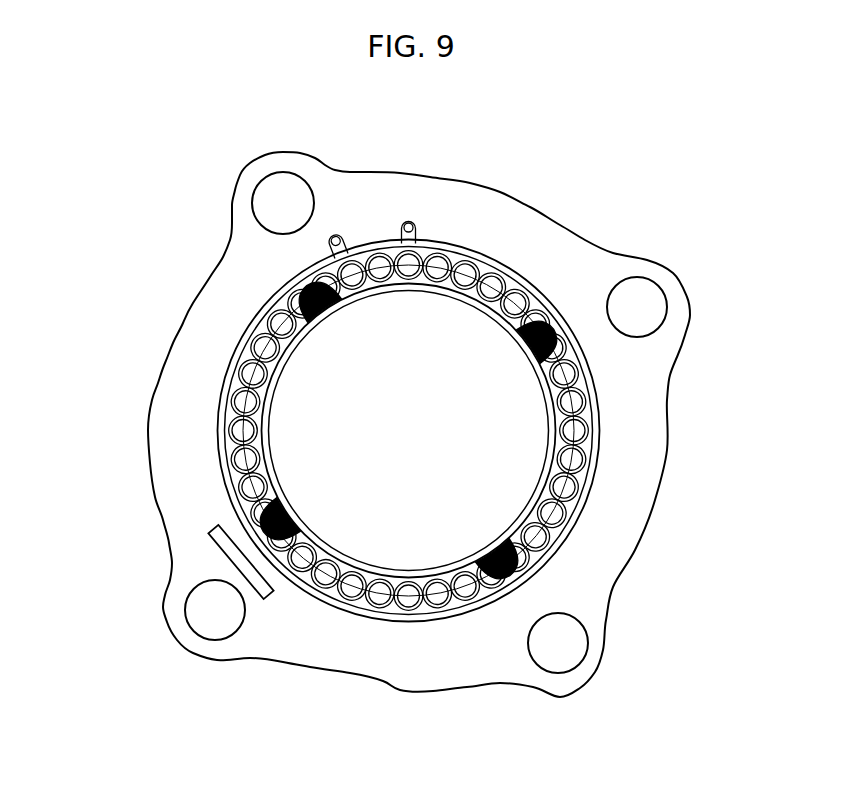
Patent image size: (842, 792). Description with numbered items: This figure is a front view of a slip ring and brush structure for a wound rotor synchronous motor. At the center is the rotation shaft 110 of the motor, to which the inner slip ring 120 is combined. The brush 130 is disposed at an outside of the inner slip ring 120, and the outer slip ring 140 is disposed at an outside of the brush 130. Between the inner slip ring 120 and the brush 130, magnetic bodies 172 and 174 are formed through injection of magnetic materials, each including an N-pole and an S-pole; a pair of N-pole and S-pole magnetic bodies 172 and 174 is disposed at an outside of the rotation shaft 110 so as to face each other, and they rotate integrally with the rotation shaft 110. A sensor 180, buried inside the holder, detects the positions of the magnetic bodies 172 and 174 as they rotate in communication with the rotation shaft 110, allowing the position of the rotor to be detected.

The rotation shaft 110 is at (412, 558).
The inner slip ring 120 is at (381, 292).
The brush 130 is at (507, 303).
The outer slip ring 140 is at (323, 606).
The magnetic body 172 is at (503, 567).
The magnetic body 174 is at (277, 531).
The sensor 180 is at (220, 540).